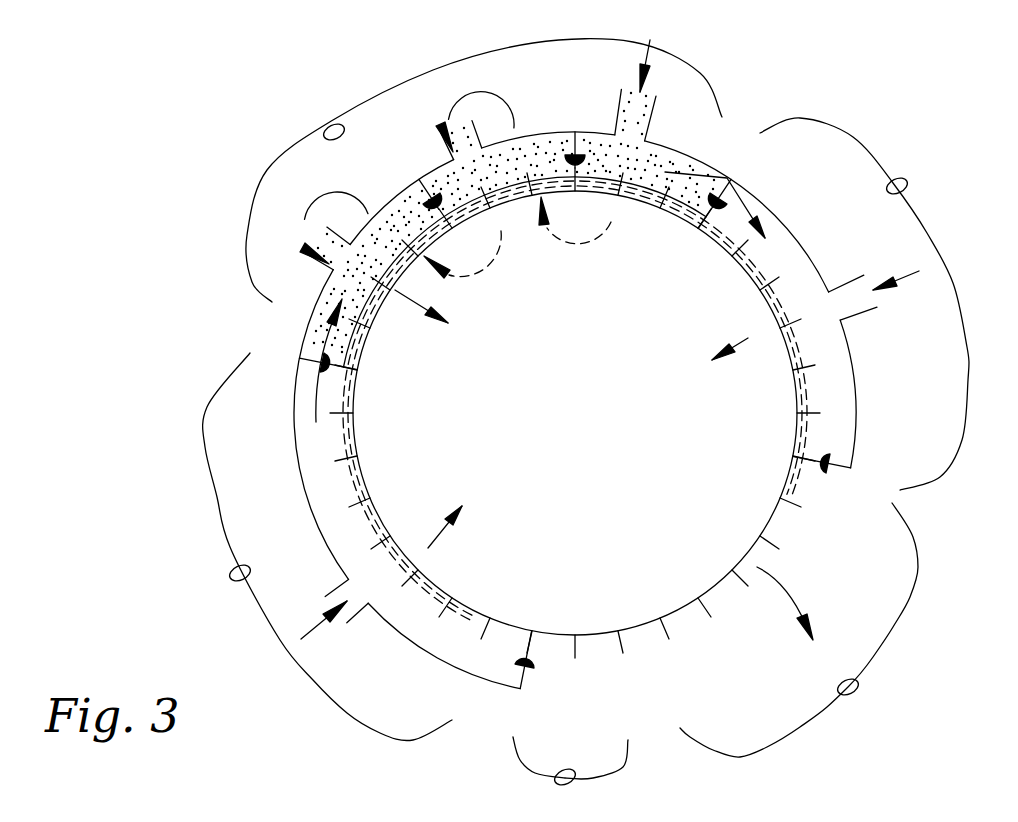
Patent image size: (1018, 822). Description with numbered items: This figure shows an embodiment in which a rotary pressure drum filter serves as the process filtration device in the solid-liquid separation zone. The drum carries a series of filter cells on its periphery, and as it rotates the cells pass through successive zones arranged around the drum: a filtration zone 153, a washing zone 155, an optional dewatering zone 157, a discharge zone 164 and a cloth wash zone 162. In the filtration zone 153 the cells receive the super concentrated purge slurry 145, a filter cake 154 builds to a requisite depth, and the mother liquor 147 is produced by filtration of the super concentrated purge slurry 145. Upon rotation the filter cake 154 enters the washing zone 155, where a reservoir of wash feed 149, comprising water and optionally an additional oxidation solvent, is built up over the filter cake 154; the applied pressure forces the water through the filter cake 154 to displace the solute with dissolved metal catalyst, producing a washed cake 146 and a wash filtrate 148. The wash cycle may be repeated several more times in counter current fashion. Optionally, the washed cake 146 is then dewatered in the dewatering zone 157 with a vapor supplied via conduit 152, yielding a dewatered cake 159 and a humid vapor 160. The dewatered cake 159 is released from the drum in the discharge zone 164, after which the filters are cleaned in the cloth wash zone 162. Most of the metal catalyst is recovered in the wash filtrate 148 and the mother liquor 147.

The super concentrated purge slurry 145 is at (302, 641).
The washed cake 146 is at (727, 205).
The mother liquor 147 is at (438, 538).
The wash filtrate 148 is at (408, 298).
The wash feed 149 is at (650, 58).
The conduit 152 is at (905, 283).
The filtration zone 153 is at (230, 571).
The filter cake 154 is at (305, 346).
The washing zone 155 is at (323, 130).
The dewatering zone 157 is at (906, 182).
The dewatered cake 159 is at (790, 583).
The humid vapor 160 is at (744, 340).
The cloth wash zone 162 is at (556, 780).
The discharge zone 164 is at (858, 686).